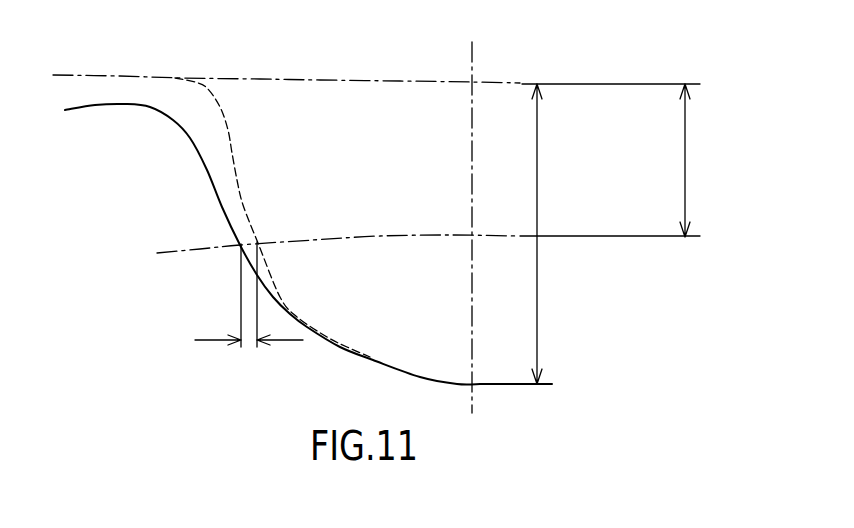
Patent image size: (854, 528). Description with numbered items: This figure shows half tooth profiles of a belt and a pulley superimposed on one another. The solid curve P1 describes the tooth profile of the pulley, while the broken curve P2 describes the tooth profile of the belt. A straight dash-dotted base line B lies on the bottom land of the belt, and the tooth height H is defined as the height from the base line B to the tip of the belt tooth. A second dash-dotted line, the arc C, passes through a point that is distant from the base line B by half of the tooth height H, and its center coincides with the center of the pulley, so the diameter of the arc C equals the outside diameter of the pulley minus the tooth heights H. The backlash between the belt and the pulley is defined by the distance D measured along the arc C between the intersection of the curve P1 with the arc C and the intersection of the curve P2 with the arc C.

The base line B is at (352, 80).
The arc C is at (313, 240).
The tooth profile of the pulley P1 is at (207, 171).
The tooth profile of the belt P2 is at (232, 153).
The tooth height H is at (638, 234).
The distance between the pulley tooth and the belt tooth D is at (249, 311).